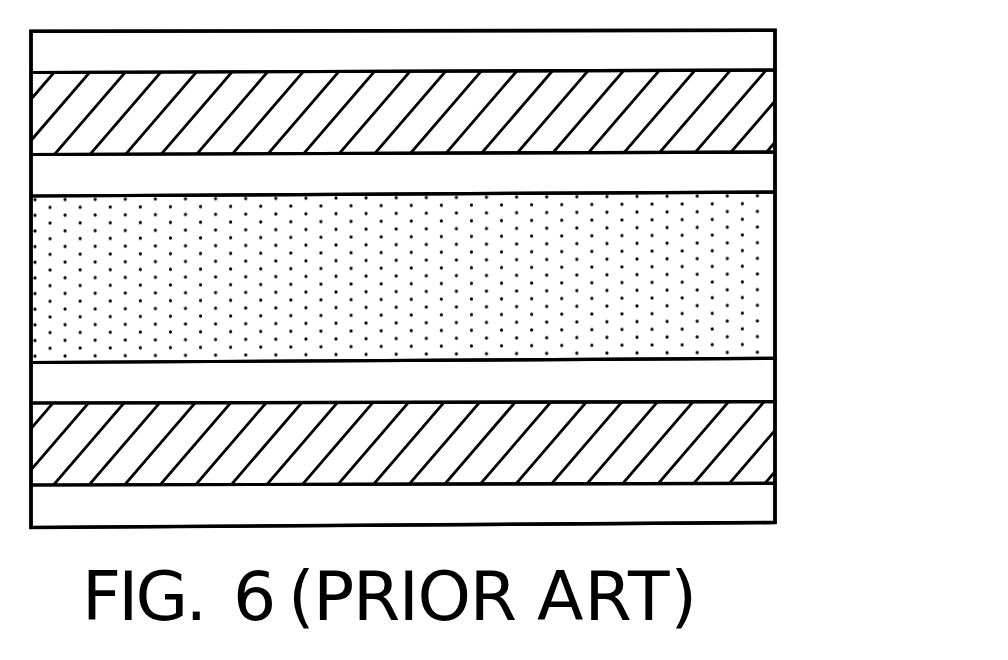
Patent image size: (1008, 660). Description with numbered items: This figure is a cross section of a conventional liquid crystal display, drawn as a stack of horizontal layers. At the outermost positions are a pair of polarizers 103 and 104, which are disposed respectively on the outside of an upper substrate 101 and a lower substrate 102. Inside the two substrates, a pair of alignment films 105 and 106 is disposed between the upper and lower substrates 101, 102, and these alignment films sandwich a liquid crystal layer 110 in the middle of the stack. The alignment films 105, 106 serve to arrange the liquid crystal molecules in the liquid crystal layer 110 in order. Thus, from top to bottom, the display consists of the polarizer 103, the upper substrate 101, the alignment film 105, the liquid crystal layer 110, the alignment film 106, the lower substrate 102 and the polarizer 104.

The polarizer 103 is at (753, 48).
The upper substrate 101 is at (753, 110).
The alignment film 105 is at (753, 172).
The liquid crystal layer 110 is at (753, 276).
The alignment film 106 is at (753, 380).
The lower substrate 102 is at (753, 438).
The polarizer 104 is at (753, 502).